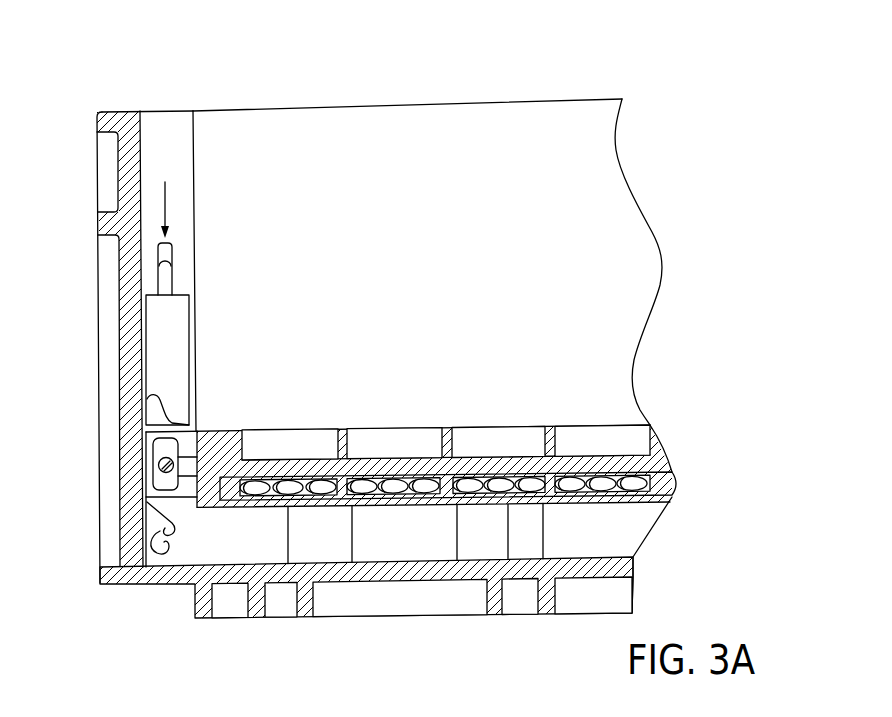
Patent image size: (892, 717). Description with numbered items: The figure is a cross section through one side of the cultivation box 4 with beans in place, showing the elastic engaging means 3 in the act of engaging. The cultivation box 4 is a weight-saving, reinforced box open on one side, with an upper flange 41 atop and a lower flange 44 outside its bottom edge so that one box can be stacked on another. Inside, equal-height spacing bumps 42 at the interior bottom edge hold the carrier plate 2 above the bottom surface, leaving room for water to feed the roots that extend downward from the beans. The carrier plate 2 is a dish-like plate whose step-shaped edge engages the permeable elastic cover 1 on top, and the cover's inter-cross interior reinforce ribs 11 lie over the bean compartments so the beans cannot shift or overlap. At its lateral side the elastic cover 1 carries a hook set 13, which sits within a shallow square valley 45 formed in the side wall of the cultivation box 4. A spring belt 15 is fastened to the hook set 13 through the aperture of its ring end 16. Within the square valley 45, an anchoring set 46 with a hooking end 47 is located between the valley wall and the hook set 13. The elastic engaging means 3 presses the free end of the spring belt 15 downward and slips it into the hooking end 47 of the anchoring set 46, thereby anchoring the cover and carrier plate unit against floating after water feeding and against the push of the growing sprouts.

The permeable elastic cover 1 is at (409, 466).
The carrier plate 2 is at (632, 504).
The elastic engaging means 3 is at (185, 294).
The cultivation box 4 is at (424, 95).
The interior reinforce ribs 11 is at (453, 442).
The hook set 13 is at (118, 464).
The spring belt 15 is at (158, 467).
The ring end 16 is at (158, 482).
The upper flange 41 is at (103, 113).
The spacing bumps 42 is at (535, 533).
The lower flange 44 is at (197, 598).
The square valley 45 is at (142, 145).
The anchoring set 46 is at (163, 518).
The hooking end 47 is at (173, 543).